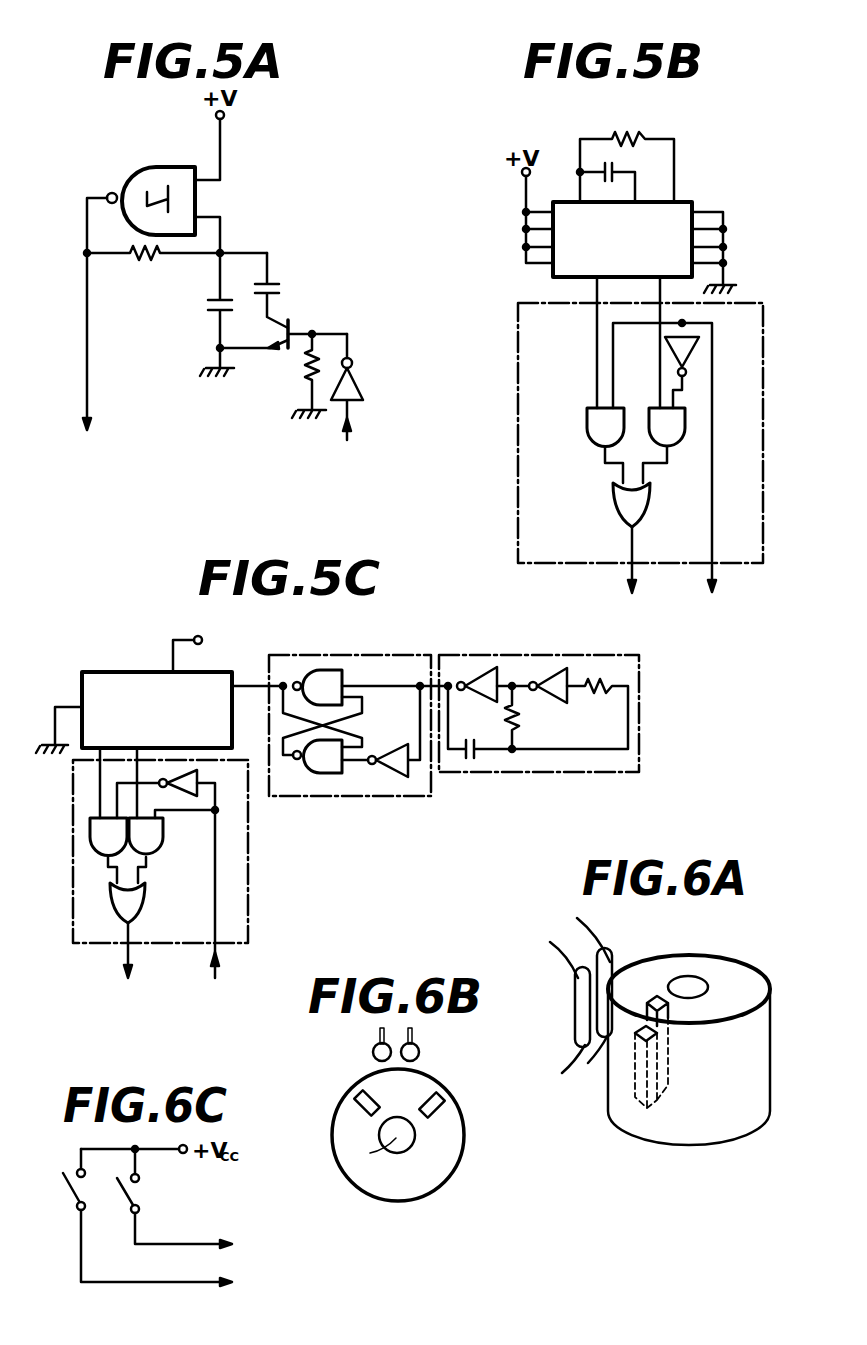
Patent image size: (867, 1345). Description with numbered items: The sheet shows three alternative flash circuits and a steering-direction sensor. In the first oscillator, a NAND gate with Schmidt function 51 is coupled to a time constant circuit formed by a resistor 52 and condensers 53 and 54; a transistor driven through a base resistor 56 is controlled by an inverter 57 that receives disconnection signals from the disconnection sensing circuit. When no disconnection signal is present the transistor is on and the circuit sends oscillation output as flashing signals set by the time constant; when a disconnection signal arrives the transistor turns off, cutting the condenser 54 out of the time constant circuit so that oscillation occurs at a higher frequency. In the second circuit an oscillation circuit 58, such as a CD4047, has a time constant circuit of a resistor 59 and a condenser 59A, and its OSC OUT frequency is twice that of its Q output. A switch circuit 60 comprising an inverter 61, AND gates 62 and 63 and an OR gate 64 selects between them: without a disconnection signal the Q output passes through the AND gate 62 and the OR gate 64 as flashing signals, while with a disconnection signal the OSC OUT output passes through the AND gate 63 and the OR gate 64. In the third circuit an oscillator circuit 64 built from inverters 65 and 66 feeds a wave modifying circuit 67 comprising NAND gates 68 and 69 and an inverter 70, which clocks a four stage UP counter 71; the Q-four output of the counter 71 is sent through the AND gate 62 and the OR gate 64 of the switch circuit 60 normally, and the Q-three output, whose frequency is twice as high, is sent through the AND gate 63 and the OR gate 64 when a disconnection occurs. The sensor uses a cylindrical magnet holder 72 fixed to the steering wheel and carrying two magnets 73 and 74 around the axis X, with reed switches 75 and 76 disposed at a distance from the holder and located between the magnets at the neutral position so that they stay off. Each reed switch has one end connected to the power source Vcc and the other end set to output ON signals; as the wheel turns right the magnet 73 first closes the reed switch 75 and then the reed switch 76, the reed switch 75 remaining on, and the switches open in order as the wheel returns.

In FIG. 5A, the NAND gate with Schmidt function 51 is at (163, 167).
In FIG. 5A, the resistor 52 is at (155, 262).
In FIG. 5A, the condenser 53 is at (207, 306).
In FIG. 5A, the condenser 54 is at (279, 292).
In FIG. 5A, the base resistor 56 is at (303, 362).
In FIG. 5A, the inverter 57 is at (357, 380).
In FIG. 5B, the oscillation circuit 58 is at (681, 201).
In FIG. 5B, the resistor 59 is at (633, 128).
In FIG. 5B, the condenser 59A is at (605, 162).
In FIG. 5B, the switch circuit 60 is at (518, 385).
In FIG. 5C, the switch circuit 60 is at (248, 888).
In FIG. 5B, the inverter 61 is at (701, 350).
In FIG. 5C, the inverter 61 is at (200, 777).
In FIG. 5B, the AND gate 62 is at (678, 446).
In FIG. 5C, the AND gate 62 is at (90, 836).
In FIG. 5B, the AND gate 63 is at (591, 447).
In FIG. 5C, the AND gate 63 is at (160, 836).
In FIG. 5B, the OR gate 64 is at (616, 508).
In FIG. 5C, the OR gate 64 is at (140, 905).
In FIG. 5C, the inverter 65 is at (482, 692).
In FIG. 5C, the inverter 66 is at (553, 692).
In FIG. 5C, the wave modifying circuit 67 is at (370, 655).
In FIG. 5C, the NAND gate 68 is at (322, 669).
In FIG. 5C, the NAND gate 69 is at (315, 766).
In FIG. 5C, the inverter 70 is at (383, 749).
In FIG. 5C, the four stage UP counter 71 is at (110, 669).
In FIG. 6A, the magnet holder 72 is at (728, 966).
In FIG. 6B, the magnet holder 72 is at (464, 1148).
In FIG. 6A, the magnet 73 is at (660, 1095).
In FIG. 6B, the magnet 73 is at (358, 1099).
In FIG. 6A, the magnet 74 is at (648, 998).
In FIG. 6B, the magnet 74 is at (441, 1100).
In FIG. 6A, the reed switch 75 is at (574, 1010).
In FIG. 6B, the reed switch 75 is at (373, 1053).
In FIG. 6C, the reed switch 75 is at (69, 1201).
In FIG. 6A, the reed switch 76 is at (612, 960).
In FIG. 6B, the reed switch 76 is at (419, 1053).
In FIG. 6C, the reed switch 76 is at (135, 1195).